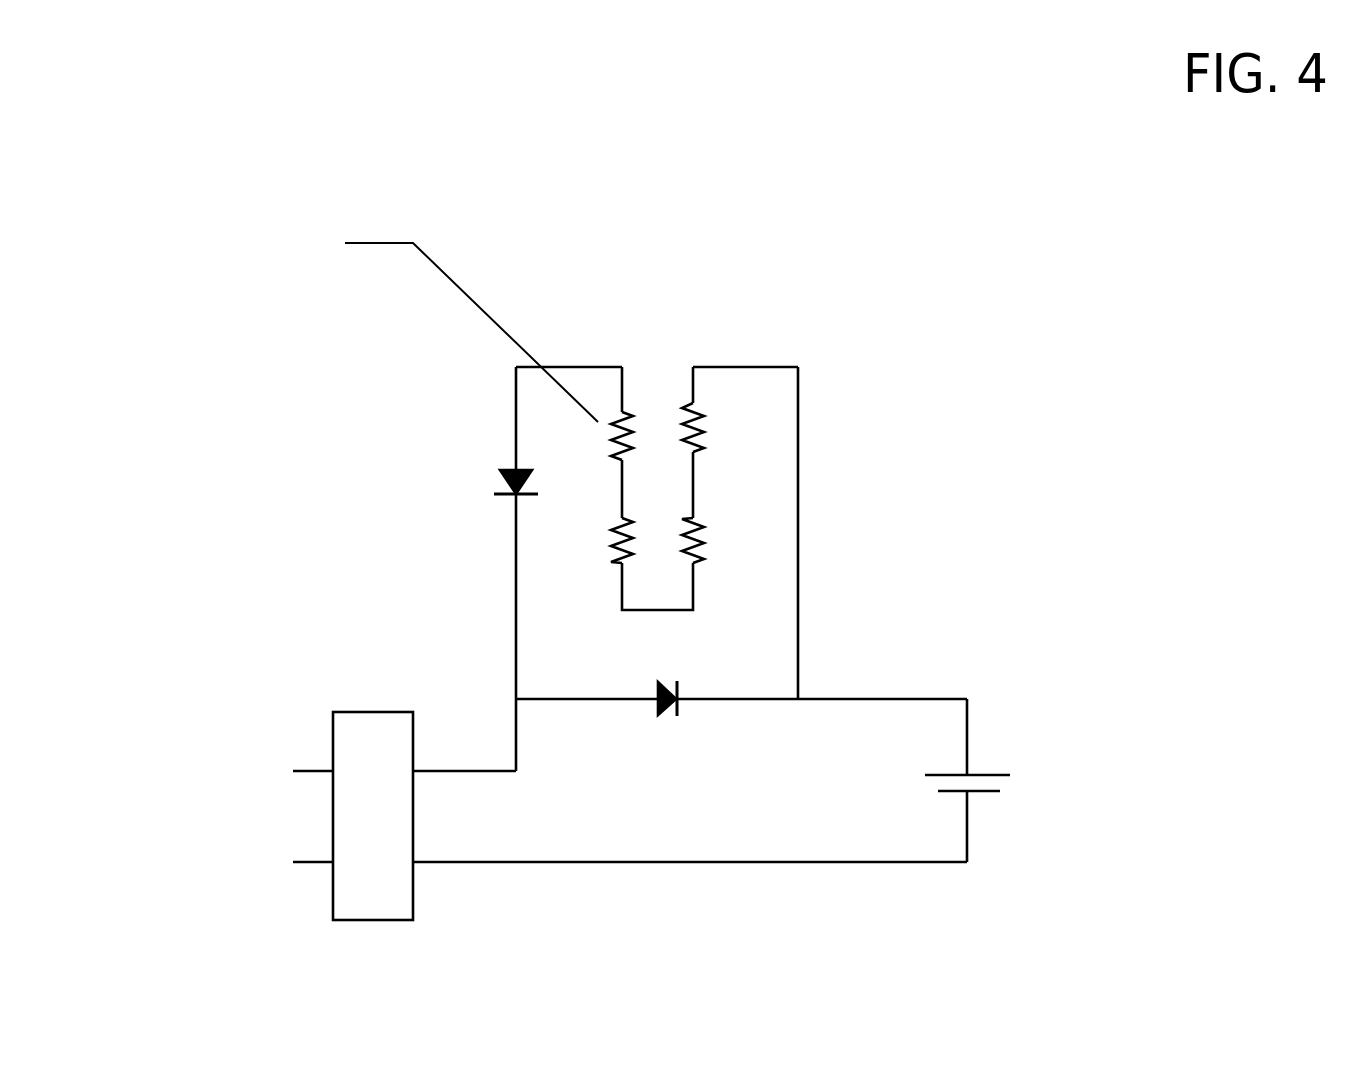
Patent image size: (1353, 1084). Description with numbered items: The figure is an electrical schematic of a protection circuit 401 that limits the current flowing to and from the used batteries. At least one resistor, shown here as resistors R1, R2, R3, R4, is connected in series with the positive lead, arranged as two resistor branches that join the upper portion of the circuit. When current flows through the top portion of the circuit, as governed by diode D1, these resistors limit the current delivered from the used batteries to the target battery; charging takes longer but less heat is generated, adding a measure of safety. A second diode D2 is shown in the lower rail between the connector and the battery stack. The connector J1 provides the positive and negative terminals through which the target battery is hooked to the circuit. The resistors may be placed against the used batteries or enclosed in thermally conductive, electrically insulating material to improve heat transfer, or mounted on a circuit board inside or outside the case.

The battery charging circuit 401 is at (660, 268).
The resistor R1 is at (591, 437).
The resistor R2 is at (590, 557).
The resistor R3 is at (728, 432).
The resistor R4 is at (730, 557).
The diode D1 is at (440, 472).
The diode D2 1N5819 D2 is at (723, 750).
The connector J1 is at (376, 752).